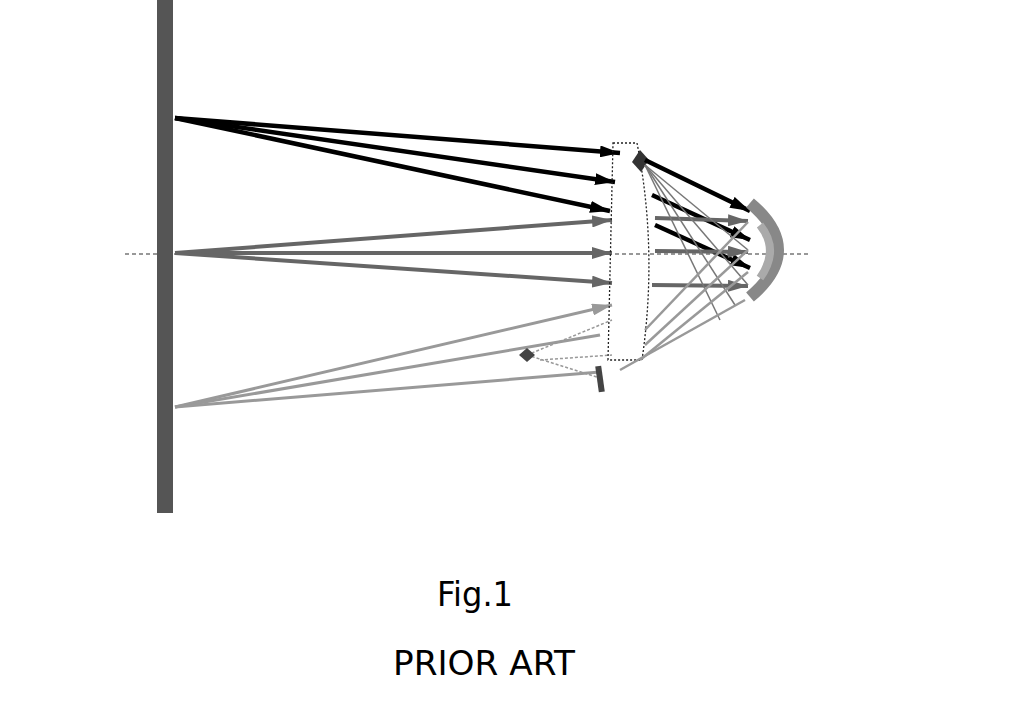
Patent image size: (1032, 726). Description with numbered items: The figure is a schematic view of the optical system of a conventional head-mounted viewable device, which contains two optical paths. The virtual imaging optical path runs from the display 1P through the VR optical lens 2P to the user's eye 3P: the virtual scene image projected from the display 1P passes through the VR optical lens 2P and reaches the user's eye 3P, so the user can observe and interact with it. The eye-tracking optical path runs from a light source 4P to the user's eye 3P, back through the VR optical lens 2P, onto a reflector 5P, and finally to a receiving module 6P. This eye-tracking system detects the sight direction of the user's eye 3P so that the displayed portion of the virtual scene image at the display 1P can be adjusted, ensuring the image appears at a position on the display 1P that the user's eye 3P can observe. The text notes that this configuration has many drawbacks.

The display 1P is at (165, 52).
The VR optical lens 2P is at (630, 150).
The user's eye 3P is at (803, 232).
The light source 4P is at (650, 160).
The reflector 5P is at (526, 364).
The receiving module 6P is at (606, 394).